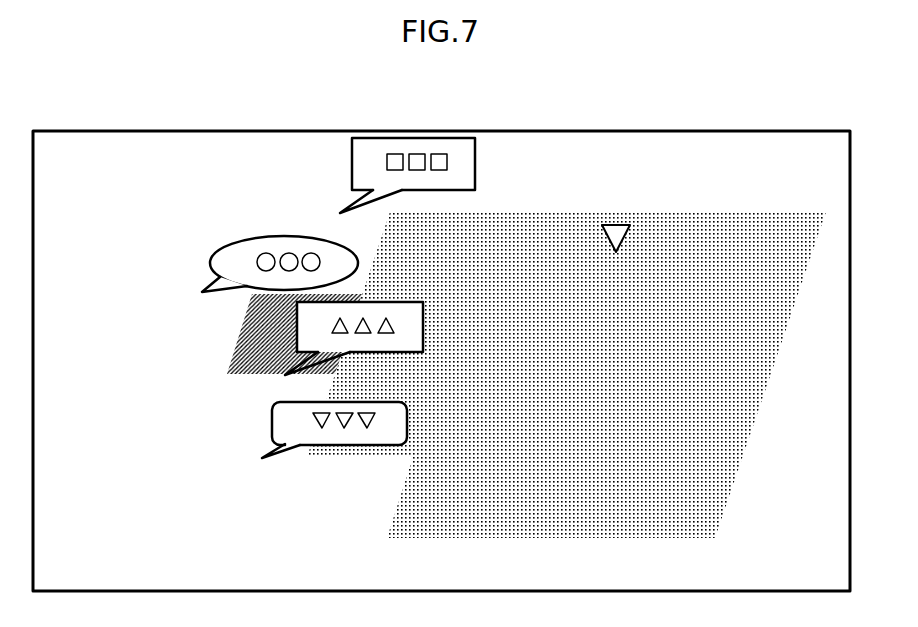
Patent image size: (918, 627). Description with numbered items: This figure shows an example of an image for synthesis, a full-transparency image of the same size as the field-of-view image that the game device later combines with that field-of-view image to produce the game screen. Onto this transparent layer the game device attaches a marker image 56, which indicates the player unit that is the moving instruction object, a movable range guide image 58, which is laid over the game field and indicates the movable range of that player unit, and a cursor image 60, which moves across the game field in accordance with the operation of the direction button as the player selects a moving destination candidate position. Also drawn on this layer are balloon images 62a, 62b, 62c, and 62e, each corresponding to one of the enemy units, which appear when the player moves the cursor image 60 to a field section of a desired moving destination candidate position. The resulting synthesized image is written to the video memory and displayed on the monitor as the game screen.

The marker image 56 is at (616, 224).
The movable range guide image 58 is at (512, 513).
The cursor image 60 is at (245, 365).
The balloon image 62a is at (420, 138).
The balloon image 62b is at (234, 236).
The balloon image 62c is at (297, 325).
The balloon image 62e is at (358, 446).